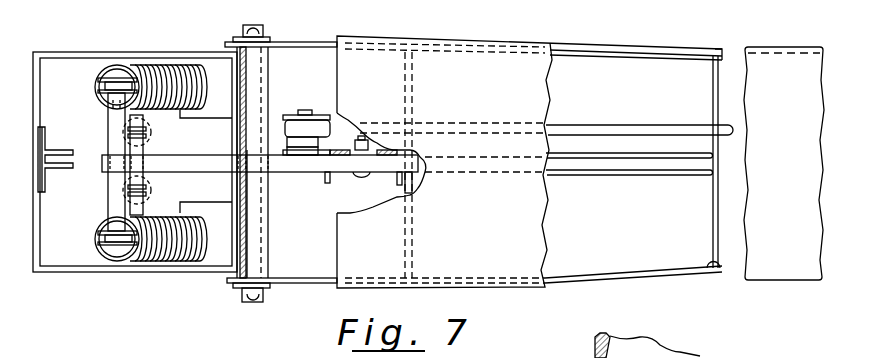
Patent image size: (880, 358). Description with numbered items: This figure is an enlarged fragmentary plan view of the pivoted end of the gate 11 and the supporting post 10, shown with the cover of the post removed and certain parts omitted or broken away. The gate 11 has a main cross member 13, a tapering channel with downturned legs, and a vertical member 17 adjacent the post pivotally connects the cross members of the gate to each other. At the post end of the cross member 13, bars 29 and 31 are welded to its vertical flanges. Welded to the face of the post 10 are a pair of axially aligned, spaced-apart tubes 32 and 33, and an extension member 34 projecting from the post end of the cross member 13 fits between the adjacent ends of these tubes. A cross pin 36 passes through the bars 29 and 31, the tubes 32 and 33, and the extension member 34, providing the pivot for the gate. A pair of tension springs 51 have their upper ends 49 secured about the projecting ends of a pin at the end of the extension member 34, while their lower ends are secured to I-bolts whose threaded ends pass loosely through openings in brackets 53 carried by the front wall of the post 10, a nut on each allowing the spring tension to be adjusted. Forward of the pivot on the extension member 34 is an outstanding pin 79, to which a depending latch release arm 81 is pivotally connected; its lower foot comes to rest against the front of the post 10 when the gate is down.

The supporting post 10 is at (158, 275).
The gate 11 is at (507, 38).
The main cross member 13 is at (793, 62).
The vertical member 17 is at (383, 153).
The bar 29 is at (292, 42).
The bar 31 is at (313, 288).
The tube 32 is at (258, 92).
The tube 33 is at (262, 217).
The extension member 34 is at (217, 153).
The cross pin 36 is at (253, 303).
The upper ends of tension springs 49 is at (100, 87).
The tension spring 51 is at (107, 108).
The bracket 53 is at (215, 67).
The outstanding pin 79 is at (308, 110).
The latch release arm 81 is at (283, 150).